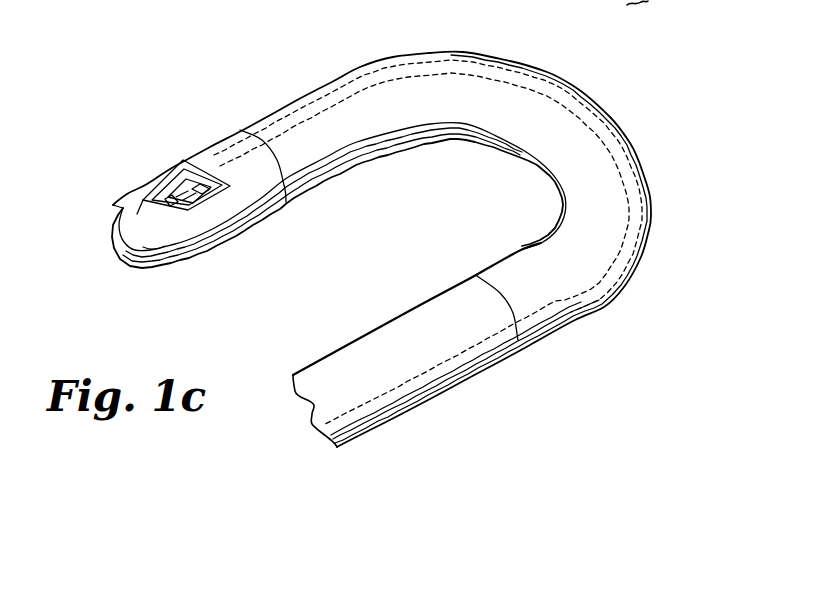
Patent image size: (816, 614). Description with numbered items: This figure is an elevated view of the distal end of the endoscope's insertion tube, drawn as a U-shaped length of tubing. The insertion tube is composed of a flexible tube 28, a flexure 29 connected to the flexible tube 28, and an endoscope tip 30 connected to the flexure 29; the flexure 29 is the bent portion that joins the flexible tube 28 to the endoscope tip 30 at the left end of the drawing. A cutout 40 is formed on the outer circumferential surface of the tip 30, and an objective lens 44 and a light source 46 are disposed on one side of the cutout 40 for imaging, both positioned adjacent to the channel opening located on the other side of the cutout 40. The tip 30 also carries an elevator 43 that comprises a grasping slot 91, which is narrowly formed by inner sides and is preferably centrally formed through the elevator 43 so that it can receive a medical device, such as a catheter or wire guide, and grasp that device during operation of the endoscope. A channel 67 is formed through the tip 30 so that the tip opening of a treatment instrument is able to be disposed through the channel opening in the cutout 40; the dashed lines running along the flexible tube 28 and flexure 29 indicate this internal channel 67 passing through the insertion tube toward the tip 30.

The flexible tube 28 is at (452, 382).
The flexure 29 is at (652, 188).
The endoscope tip 30 is at (106, 230).
The cutout 40 is at (131, 208).
The elevator 43 is at (141, 201).
The objective lens 44 is at (208, 199).
The light source 46 is at (205, 209).
The channel 67 is at (172, 176).
The grasping slot 91 is at (165, 197).